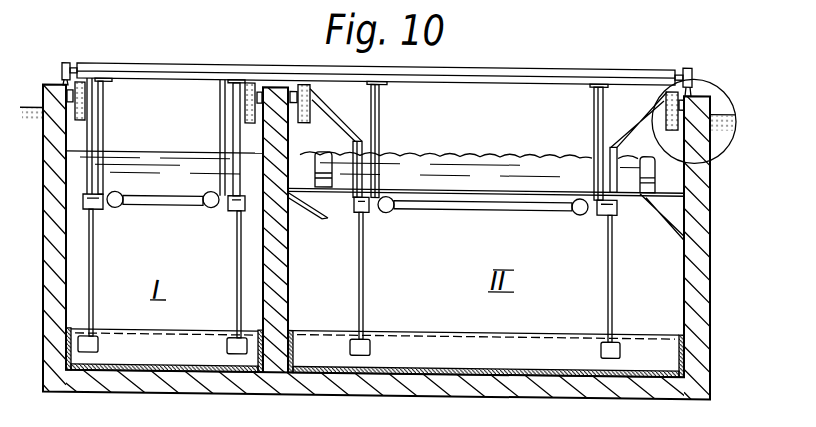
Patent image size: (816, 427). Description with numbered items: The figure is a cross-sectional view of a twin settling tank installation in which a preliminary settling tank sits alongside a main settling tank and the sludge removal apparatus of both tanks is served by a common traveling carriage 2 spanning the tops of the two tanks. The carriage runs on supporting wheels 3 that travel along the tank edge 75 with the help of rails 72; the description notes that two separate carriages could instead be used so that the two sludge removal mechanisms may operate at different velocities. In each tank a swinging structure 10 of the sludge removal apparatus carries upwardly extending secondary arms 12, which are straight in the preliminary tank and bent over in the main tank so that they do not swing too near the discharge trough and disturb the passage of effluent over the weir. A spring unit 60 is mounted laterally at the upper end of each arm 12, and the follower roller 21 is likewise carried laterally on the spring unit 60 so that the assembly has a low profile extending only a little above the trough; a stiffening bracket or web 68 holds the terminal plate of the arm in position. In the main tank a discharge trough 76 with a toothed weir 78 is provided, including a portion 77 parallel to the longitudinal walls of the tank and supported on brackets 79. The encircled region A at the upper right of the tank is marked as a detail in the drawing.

The traveling carriage 2 is at (442, 67).
The supporting wheels 3 is at (66, 62).
The swinging structure 10 is at (248, 261).
The secondary arm 12 is at (73, 186).
The follower roller 21 is at (66, 97).
The spring unit 60 is at (78, 80).
The stiffening bracket 68 is at (708, 159).
The rails 72 is at (699, 80).
The tank edge 75 is at (69, 92).
The discharge trough 76 is at (464, 168).
The trough portion 77 is at (320, 146).
The toothed weir 78 is at (531, 140).
The brackets 79 is at (672, 208).
The detail A is at (734, 91).